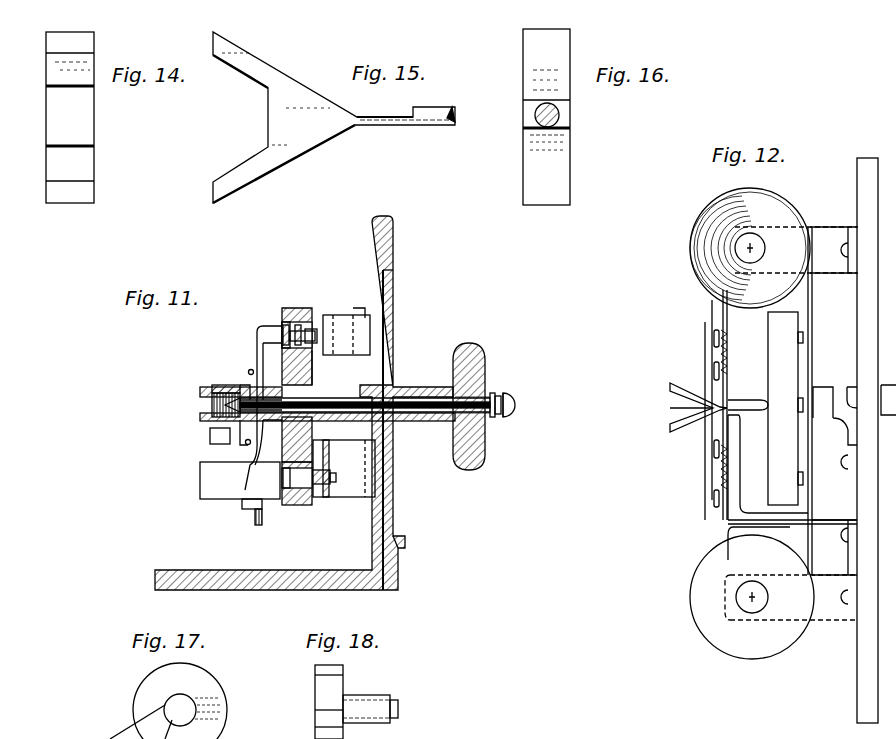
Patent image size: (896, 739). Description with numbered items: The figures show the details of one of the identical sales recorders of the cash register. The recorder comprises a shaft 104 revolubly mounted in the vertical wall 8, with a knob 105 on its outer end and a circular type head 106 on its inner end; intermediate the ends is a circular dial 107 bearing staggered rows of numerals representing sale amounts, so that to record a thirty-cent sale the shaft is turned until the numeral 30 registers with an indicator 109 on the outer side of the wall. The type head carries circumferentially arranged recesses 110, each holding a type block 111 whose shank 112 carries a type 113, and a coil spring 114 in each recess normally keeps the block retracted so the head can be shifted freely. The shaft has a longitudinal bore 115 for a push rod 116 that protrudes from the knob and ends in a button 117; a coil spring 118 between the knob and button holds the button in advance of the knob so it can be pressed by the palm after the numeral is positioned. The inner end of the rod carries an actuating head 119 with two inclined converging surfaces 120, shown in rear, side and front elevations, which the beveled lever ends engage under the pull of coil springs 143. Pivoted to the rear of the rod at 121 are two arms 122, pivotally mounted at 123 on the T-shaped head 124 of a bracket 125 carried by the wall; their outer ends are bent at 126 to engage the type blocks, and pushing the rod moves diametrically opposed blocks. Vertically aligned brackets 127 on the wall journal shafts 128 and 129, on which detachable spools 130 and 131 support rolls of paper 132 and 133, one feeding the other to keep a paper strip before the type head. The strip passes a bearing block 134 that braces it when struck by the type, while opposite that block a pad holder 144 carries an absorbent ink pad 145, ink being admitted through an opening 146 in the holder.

In FIG. 11, the vertical wall 8 is at (395, 228).
In FIG. 17, the numeral 30 is at (168, 701).
In FIG. 11, the shaft 104 is at (410, 395).
In FIG. 11, the knob 105 is at (485, 352).
In FIG. 11, the circular type head 106 is at (292, 318).
In FIG. 11, the circular dial 107 is at (393, 330).
In FIG. 11, the indicator 109 is at (400, 542).
In FIG. 11, the recesses 110 is at (310, 332).
In FIG. 11, the type block 111 is at (282, 330).
In FIG. 11, the shank 112 is at (318, 338).
In FIG. 18, the shank 112 is at (375, 697).
In FIG. 11, the type 113 is at (312, 375).
In FIG. 18, the type 113 is at (398, 710).
In FIG. 11, the coil spring 114 is at (300, 325).
In FIG. 11, the longitudinal bore 115 is at (420, 421).
In FIG. 15, the push rod 116 is at (438, 110).
In FIG. 16, the push rod 116 is at (560, 118).
In FIG. 11, the push rod 116 is at (472, 403).
In FIG. 11, the button 117 is at (520, 404).
In FIG. 11, the coil spring 118 is at (493, 415).
In FIG. 14, the actuating head 119 is at (86, 122).
In FIG. 15, the actuating head 119 is at (275, 115).
In FIG. 11, the actuating head 119 is at (212, 405).
In FIG. 12, the actuating head 119 is at (670, 408).
In FIG. 15, the inclined converging surfaces 120 is at (250, 55).
In FIG. 16, the inclined converging surfaces 120 is at (538, 48).
In FIG. 12, the inclined converging surfaces 120 is at (683, 385).
In FIG. 11, the pivotal connection 121 is at (240, 412).
In FIG. 11, the arms 122 is at (252, 355).
In FIG. 11, the pivot 123 is at (248, 378).
In FIG. 11, the T-shaped head 124 is at (248, 372).
In FIG. 12, the bracket 125 is at (745, 522).
In FIG. 11, the bent ends 126 is at (272, 480).
In FIG. 12, the brackets 127 is at (823, 232).
In FIG. 12, the shaft 128 is at (752, 246).
In FIG. 12, the shaft 129 is at (748, 600).
In FIG. 12, the spool 130 is at (742, 250).
In FIG. 12, the spool 131 is at (742, 602).
In FIG. 11, the roll of paper 132 is at (328, 452).
In FIG. 12, the roll of paper 132 is at (705, 220).
In FIG. 11, the roll of paper 133 is at (215, 492).
In FIG. 12, the roll of paper 133 is at (752, 650).
In FIG. 12, the bearing block 134 is at (823, 390).
In FIG. 12, the coil springs 143 is at (722, 360).
In FIG. 11, the pad holder 144 is at (360, 318).
In FIG. 11, the pad 145 is at (323, 345).
In FIG. 11, the opening 146 is at (348, 318).